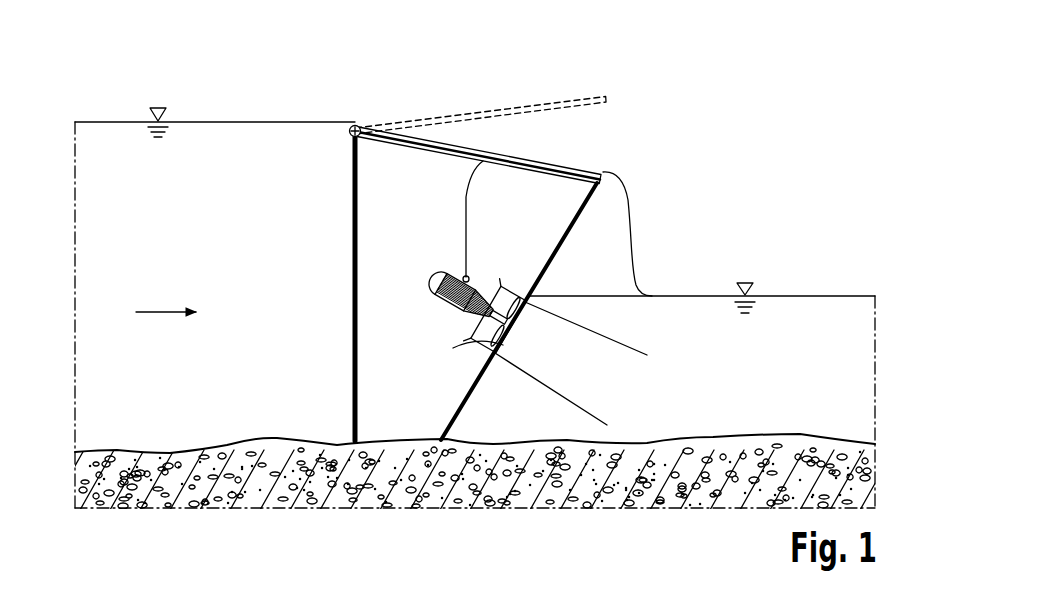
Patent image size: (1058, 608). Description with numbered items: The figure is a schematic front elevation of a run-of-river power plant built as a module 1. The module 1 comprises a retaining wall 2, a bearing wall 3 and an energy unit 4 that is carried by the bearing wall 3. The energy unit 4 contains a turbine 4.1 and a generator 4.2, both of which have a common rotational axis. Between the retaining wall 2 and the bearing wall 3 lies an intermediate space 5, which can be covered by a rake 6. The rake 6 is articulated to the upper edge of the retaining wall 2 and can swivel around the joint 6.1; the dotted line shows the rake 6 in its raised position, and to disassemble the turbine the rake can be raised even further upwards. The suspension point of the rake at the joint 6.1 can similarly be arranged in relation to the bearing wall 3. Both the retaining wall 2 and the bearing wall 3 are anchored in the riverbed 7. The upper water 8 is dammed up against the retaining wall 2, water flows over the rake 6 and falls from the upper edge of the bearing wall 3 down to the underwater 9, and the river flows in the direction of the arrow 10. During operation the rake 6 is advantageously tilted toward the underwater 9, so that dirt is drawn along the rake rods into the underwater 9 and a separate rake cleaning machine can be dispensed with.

The module 1 is at (595, 80).
The retaining wall 2 is at (353, 240).
The bearing wall 3 is at (472, 398).
The energy unit 4 is at (434, 260).
The turbine 4.1 is at (498, 285).
The generator 4.2 is at (442, 307).
The intermediate space 5 is at (405, 298).
The rake 6 is at (509, 152).
The joint 6.1 is at (357, 125).
The riverbed 7 is at (165, 450).
The upper water 8 is at (222, 122).
The underwater 9 is at (790, 295).
The arrow 10 is at (163, 312).